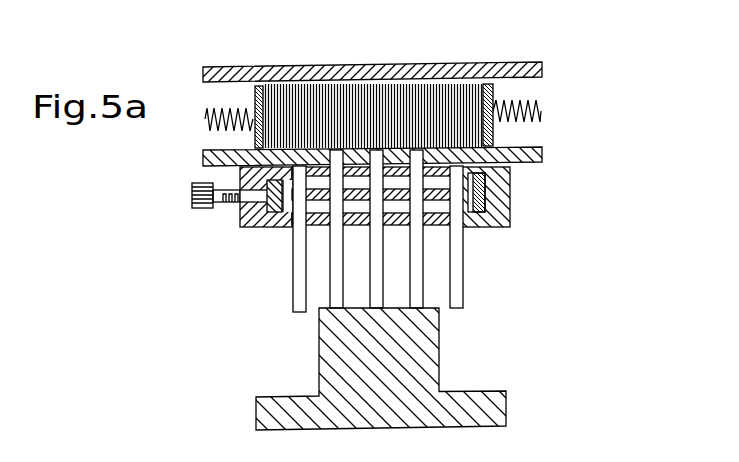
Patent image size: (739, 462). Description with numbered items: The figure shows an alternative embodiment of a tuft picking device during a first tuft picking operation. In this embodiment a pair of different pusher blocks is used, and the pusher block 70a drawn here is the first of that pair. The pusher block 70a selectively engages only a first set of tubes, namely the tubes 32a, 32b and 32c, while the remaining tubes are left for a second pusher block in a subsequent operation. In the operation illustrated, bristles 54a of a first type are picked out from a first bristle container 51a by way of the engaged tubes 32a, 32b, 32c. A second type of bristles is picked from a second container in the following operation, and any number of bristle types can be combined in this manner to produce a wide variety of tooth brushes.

The bristles of a first type 54a is at (438, 98).
The first bristle container 51a is at (512, 93).
The tube 32a is at (417, 245).
The tube 32b is at (378, 284).
The tube 32c is at (334, 285).
The pusher block 70a is at (507, 394).